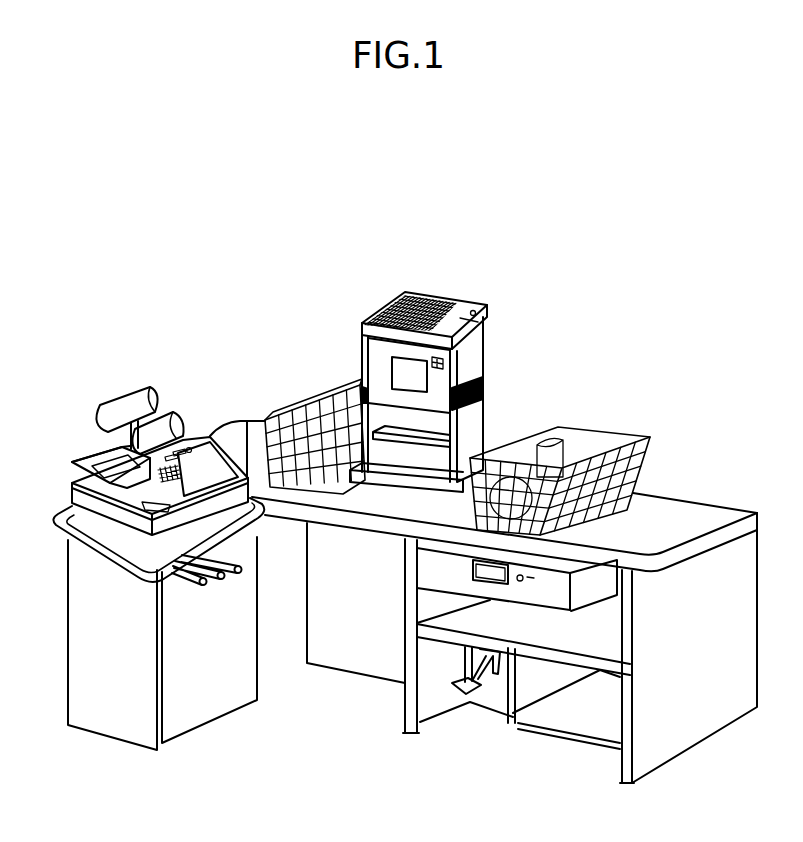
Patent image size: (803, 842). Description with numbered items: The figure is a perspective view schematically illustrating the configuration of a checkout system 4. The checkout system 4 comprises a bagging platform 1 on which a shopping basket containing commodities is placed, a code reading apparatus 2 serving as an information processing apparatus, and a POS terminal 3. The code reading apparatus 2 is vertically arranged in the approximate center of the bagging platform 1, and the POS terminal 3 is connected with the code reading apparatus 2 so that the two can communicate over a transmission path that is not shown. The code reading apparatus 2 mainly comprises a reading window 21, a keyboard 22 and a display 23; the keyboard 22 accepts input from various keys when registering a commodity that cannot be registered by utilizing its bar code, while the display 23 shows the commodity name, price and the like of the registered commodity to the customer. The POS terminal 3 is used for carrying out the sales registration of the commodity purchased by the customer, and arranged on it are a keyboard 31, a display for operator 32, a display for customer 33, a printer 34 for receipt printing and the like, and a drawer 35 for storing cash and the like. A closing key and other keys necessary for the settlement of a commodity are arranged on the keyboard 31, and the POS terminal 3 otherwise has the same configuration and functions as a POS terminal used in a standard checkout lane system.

The bagging platform 1 is at (746, 546).
The code reading apparatus 2 is at (482, 342).
The reading window 21 is at (397, 367).
The keyboard 22 is at (423, 296).
The display 23 is at (492, 335).
The POS terminal 3 is at (69, 474).
The keyboard 31 is at (213, 467).
The display for operator 32 is at (168, 432).
The display for customer 33 is at (144, 389).
The printer 34 is at (128, 488).
The drawer 35 is at (182, 532).
The checkout system 4 is at (620, 267).